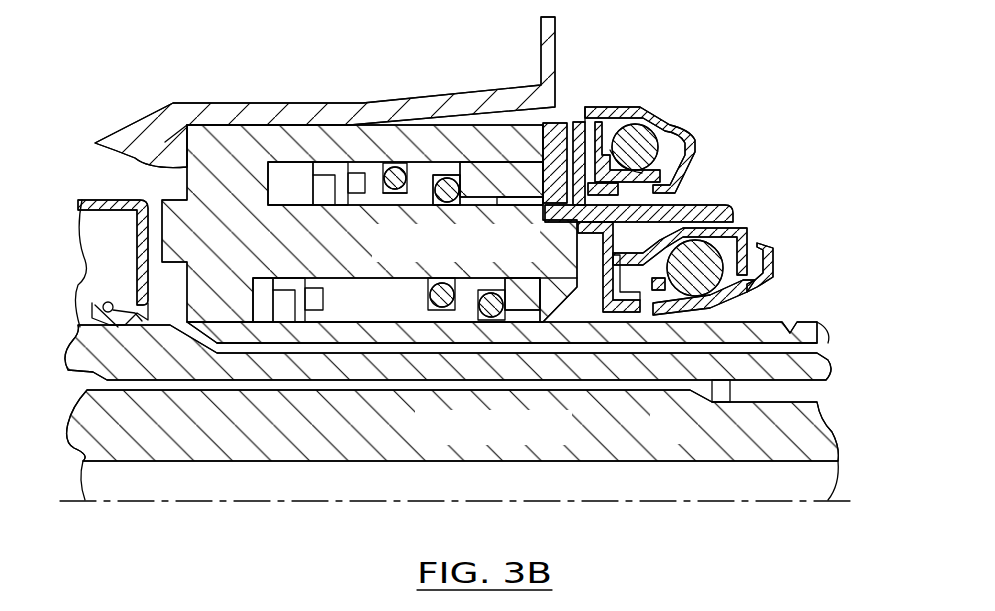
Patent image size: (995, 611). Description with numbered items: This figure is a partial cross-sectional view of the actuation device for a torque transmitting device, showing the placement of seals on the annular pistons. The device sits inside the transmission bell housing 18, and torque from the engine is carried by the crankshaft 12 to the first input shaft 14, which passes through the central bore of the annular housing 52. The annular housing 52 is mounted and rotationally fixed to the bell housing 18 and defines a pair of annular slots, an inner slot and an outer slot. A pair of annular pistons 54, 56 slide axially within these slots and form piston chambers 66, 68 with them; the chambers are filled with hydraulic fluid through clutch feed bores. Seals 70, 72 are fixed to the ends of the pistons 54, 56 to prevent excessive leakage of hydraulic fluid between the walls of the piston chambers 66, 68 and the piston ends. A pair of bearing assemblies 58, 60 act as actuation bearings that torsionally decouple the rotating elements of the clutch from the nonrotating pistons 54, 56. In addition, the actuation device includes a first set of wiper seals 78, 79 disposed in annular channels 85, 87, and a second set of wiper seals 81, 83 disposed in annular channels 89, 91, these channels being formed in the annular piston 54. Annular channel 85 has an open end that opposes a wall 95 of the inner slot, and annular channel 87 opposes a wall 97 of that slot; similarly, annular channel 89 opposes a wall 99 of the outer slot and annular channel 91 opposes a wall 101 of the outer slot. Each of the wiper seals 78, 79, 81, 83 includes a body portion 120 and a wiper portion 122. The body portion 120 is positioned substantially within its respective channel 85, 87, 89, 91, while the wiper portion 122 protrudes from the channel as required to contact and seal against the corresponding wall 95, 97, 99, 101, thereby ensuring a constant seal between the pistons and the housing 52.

The crankshaft 12 is at (680, 439).
The first input shaft 14 is at (772, 367).
The bell housing 18 is at (278, 113).
The annular housing 52 is at (207, 153).
The annular piston 54 is at (375, 312).
The annular piston 56 is at (500, 175).
The bearing assembly 58 is at (640, 107).
The bearing assembly 60 is at (740, 230).
The piston chamber 66 is at (258, 140).
The piston chamber 68 is at (270, 310).
The seal 70 is at (287, 293).
The seal 72 is at (332, 175).
The wiper seal 78 is at (393, 193).
The wiper seal 79 is at (455, 172).
The wiper seal 81 is at (453, 325).
The wiper seal 83 is at (500, 315).
The annular channel 85 is at (440, 173).
The annular channel 87 is at (490, 170).
The annular channel 89 is at (460, 322).
The annular channel 91 is at (497, 196).
The wall 95 is at (576, 135).
The wall 97 is at (535, 160).
The wall 99 is at (340, 273).
The wall 101 is at (322, 313).
The body portion 120 is at (390, 175).
The wiper portion 122 is at (395, 168).